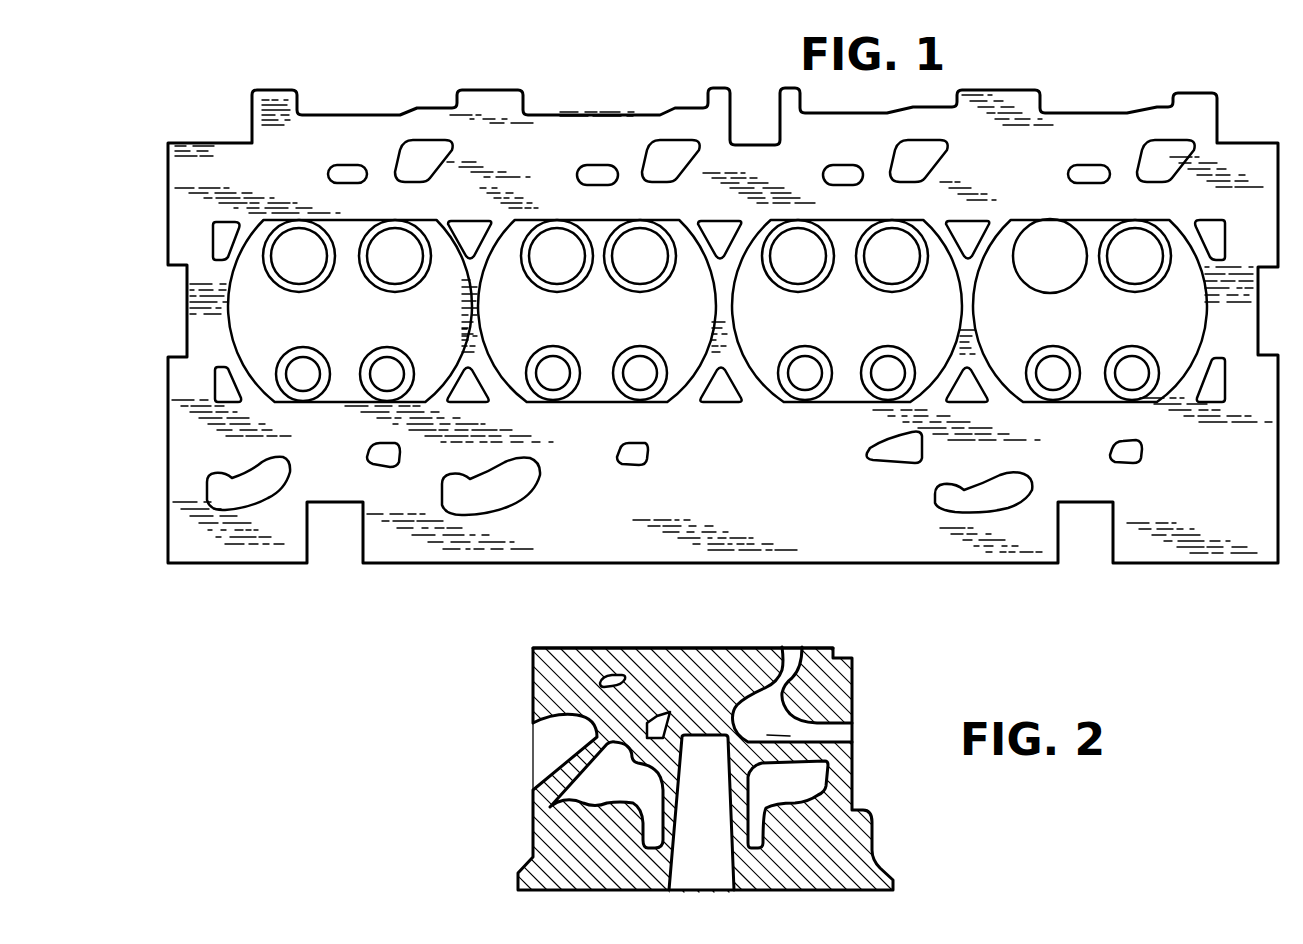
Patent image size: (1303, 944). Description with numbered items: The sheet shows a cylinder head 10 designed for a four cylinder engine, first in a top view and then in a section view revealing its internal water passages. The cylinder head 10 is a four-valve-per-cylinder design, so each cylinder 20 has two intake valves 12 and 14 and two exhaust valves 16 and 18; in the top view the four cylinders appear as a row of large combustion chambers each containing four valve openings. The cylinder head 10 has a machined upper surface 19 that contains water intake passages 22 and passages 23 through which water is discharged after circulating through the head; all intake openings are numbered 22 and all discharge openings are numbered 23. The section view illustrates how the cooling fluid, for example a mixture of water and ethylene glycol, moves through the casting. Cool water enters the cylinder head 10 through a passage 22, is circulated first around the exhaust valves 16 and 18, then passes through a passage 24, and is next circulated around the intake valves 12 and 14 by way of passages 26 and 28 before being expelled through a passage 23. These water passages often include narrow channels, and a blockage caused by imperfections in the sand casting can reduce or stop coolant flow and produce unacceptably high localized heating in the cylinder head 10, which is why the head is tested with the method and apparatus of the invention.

In FIG. 1, the cylinder head 10 is at (262, 575).
In FIG. 2, the cylinder head 10 is at (561, 636).
In FIG. 1, the intake valve 12 is at (551, 372).
In FIG. 1, the intake valve 14 is at (640, 372).
In FIG. 1, the exhaust valve 16 is at (559, 270).
In FIG. 1, the exhaust valve 18 is at (650, 260).
In FIG. 1, the machined upper surface 19 is at (1088, 443).
In FIG. 2, the machined upper surface 19 is at (583, 647).
In FIG. 1, the cylinder 20 is at (415, 305).
In FIG. 1, the water intake passage 22 is at (344, 173).
In FIG. 2, the water intake passage 22 is at (795, 653).
In FIG. 1, the water discharge passage 23 is at (390, 462).
In FIG. 2, the passage 24 is at (793, 735).
In FIG. 2, the passage 26 is at (613, 676).
In FIG. 2, the passage 28 is at (661, 713).